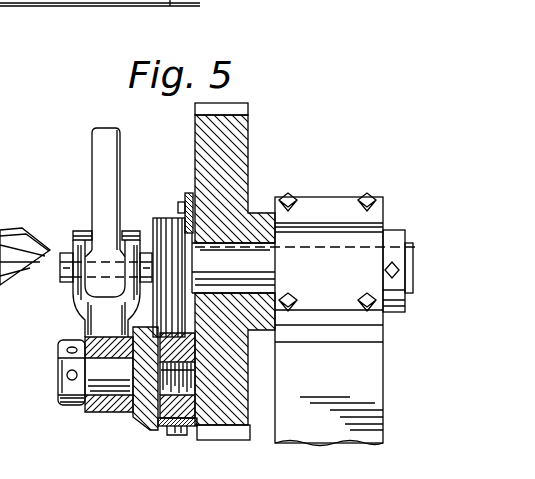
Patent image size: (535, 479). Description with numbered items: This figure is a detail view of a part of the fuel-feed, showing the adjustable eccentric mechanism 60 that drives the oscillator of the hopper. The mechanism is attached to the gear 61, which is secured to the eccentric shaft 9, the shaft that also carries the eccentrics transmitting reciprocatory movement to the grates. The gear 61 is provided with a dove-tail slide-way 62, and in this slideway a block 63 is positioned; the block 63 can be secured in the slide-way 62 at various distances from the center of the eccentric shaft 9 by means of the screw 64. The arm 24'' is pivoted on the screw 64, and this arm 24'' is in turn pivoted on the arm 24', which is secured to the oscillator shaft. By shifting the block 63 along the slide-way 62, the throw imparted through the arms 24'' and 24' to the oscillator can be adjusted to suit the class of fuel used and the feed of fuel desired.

The eccentric shaft 9 is at (250, 265).
The actuating-arm 24' is at (72, 189).
The actuating-arm 24'' is at (85, 284).
The adjustable eccentric mechanism 60 is at (116, 396).
The gear 61 is at (243, 143).
The dove-tail slide-way 62 is at (168, 235).
The block 63 is at (177, 420).
The screw 64 is at (68, 379).